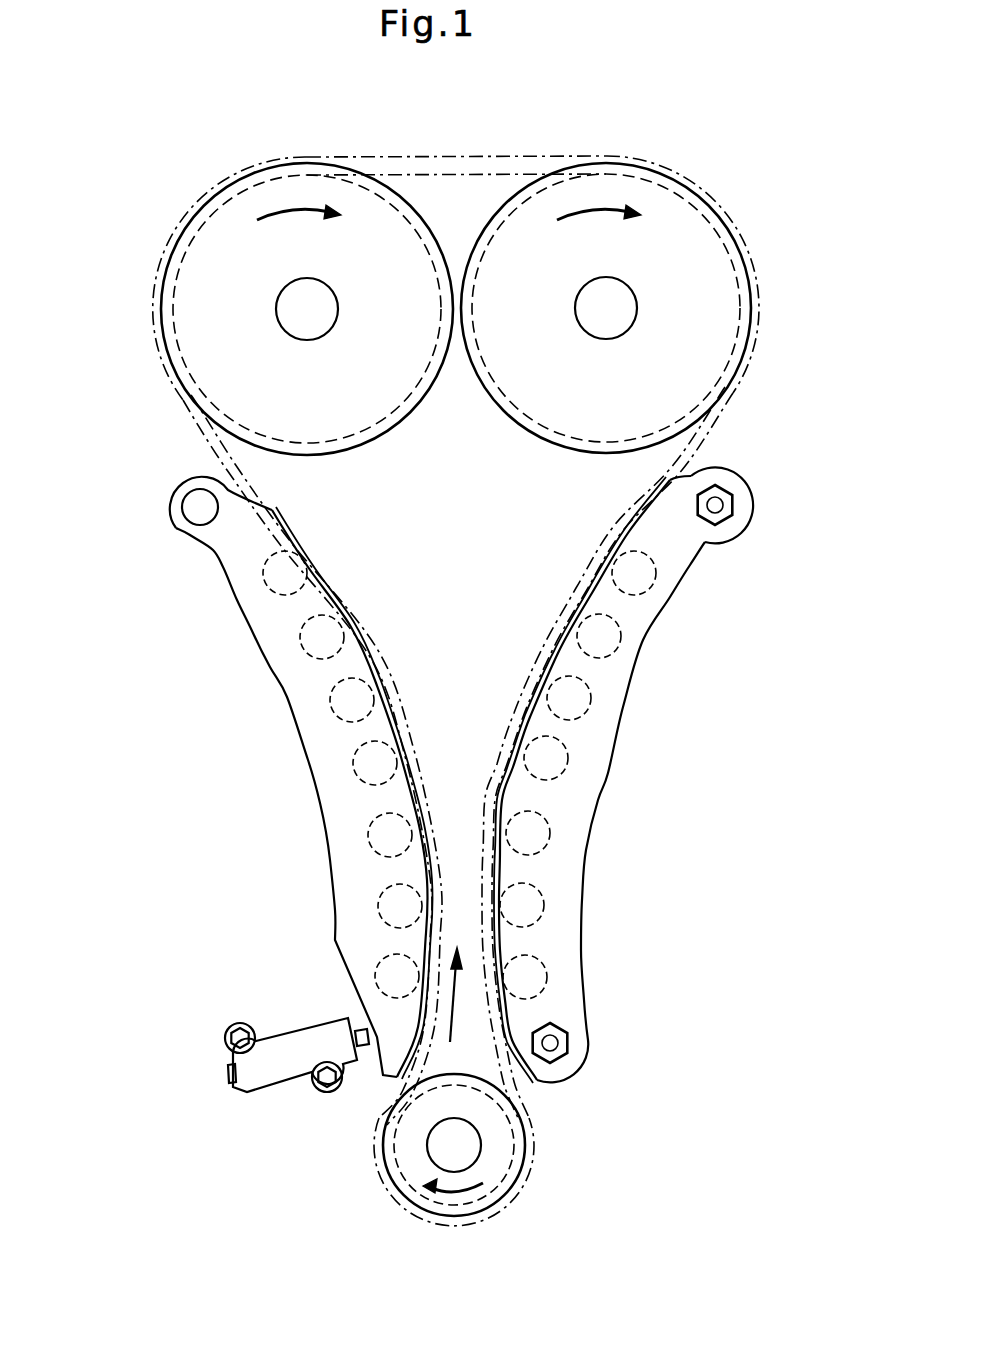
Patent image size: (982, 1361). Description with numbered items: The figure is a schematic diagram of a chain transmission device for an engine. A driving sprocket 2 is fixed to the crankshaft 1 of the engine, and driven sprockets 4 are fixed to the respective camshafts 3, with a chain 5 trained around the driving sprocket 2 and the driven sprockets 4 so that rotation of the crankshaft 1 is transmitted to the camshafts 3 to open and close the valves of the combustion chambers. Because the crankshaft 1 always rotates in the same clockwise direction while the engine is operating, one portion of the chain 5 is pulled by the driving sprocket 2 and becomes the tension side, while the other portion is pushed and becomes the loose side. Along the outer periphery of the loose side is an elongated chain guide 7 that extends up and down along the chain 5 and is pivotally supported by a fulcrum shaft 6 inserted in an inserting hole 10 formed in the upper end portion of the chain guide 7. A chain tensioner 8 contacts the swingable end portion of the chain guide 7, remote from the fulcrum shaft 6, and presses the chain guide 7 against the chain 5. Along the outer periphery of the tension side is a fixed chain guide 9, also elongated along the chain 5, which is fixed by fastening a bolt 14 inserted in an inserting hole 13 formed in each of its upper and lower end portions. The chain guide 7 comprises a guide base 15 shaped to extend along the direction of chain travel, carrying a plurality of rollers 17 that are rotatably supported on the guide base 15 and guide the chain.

The crankshaft 1 is at (438, 1144).
The driving sprocket 2 is at (400, 1180).
The camshaft 3 is at (292, 306).
The driven sprocket 4 is at (160, 300).
The chain 5 is at (222, 431).
The fulcrum shaft 6 is at (200, 507).
The chain guide 7 is at (298, 744).
The chain tensioner 8 is at (263, 1078).
The fixed chain guide 9 is at (612, 762).
The inserting hole 10 is at (190, 517).
The inserting hole 13 is at (720, 497).
The bolt 14 is at (733, 503).
The guide base 15 is at (322, 799).
The roller 17 is at (370, 842).